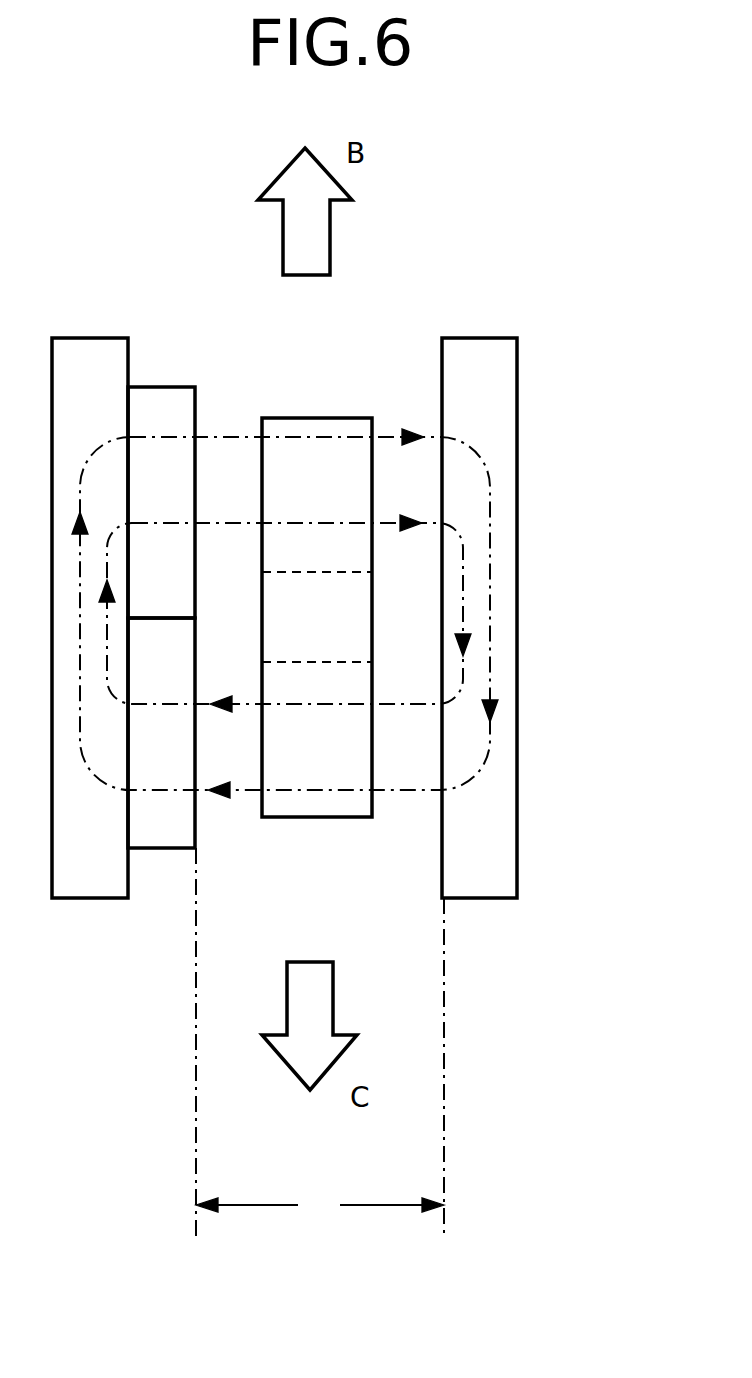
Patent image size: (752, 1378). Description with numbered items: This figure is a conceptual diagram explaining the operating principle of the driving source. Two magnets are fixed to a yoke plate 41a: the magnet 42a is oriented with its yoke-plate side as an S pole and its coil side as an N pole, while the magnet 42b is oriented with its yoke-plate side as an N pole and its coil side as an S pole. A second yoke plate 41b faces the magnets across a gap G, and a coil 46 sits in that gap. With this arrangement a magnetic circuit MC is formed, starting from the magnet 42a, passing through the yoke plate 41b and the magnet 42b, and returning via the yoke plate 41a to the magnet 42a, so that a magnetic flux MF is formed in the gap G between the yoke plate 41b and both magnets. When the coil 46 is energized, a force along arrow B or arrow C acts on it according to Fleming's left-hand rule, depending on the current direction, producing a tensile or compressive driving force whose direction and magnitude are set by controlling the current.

The yoke plate 41a is at (90, 350).
The yoke plate 41b is at (472, 346).
The magnet 42a is at (175, 392).
The magnet 42b is at (165, 848).
The coil 46 is at (312, 418).
The magnetic circuit MC is at (502, 620).
The magnetic flux MF is at (409, 788).
The gap G is at (320, 1206).